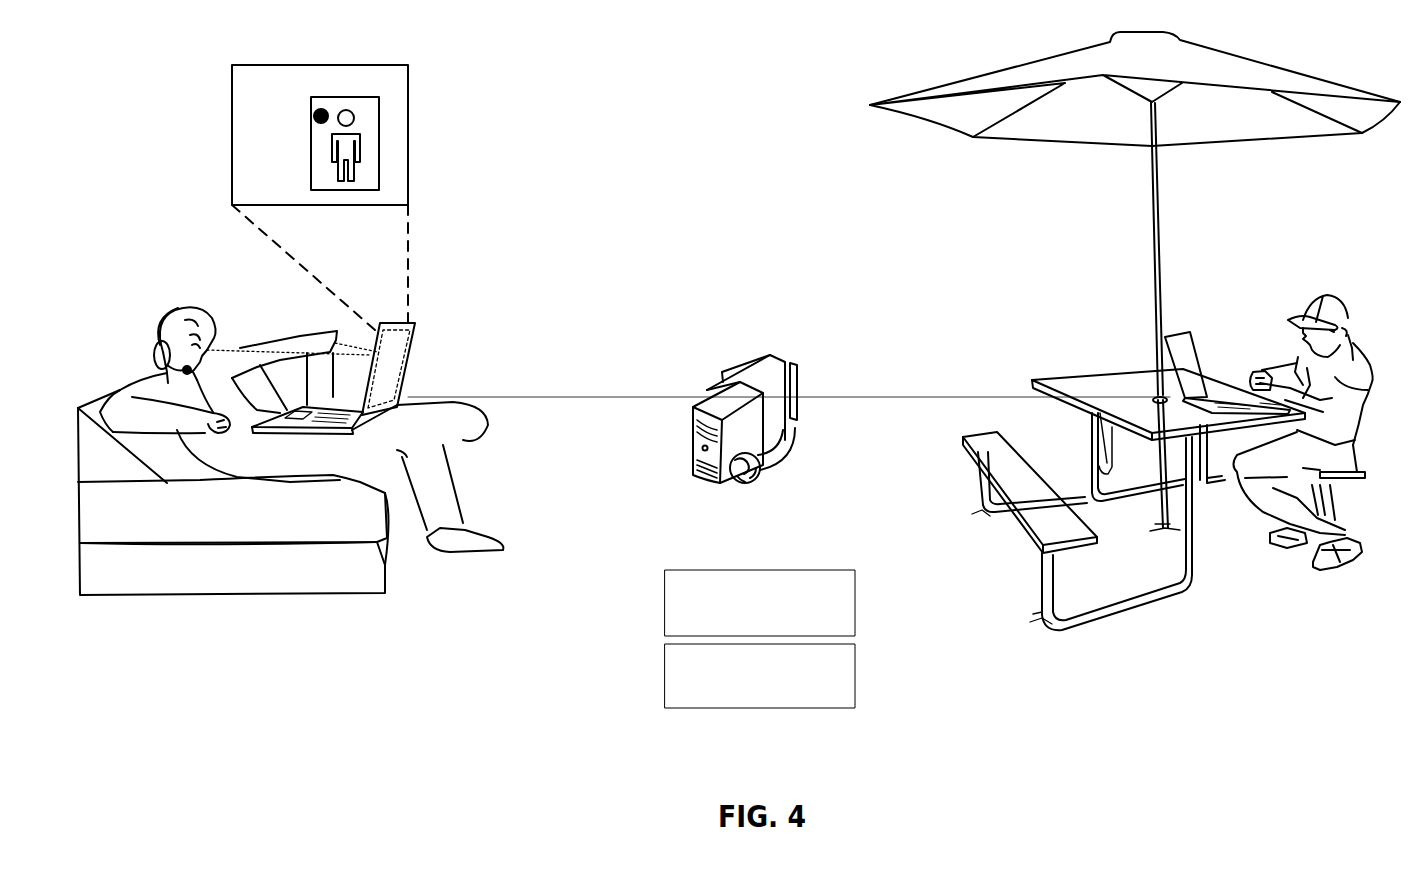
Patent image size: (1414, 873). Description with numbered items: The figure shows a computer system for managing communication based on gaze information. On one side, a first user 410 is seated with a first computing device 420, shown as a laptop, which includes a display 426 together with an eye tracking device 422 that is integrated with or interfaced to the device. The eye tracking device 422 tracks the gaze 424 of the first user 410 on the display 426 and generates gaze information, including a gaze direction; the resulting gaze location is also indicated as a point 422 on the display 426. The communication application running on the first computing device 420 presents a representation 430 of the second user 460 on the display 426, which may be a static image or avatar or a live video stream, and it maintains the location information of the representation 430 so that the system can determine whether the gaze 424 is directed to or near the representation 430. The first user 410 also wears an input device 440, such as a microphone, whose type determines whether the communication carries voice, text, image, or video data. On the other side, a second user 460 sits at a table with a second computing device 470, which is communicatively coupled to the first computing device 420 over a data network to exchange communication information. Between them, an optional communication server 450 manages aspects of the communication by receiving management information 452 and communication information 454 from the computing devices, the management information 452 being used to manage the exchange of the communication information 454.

The first user 410 is at (150, 383).
The first computing device 420 is at (357, 437).
The eye tracking device 422 is at (320, 108).
The gaze 424 is at (273, 355).
The display 426 is at (385, 380).
The representation 430 is at (364, 97).
The input device 440 is at (155, 330).
The communication server 450 is at (735, 487).
The management information 452 is at (760, 603).
The communication information 454 is at (760, 676).
The second user 460 is at (1365, 447).
The second computing device 470 is at (1198, 355).